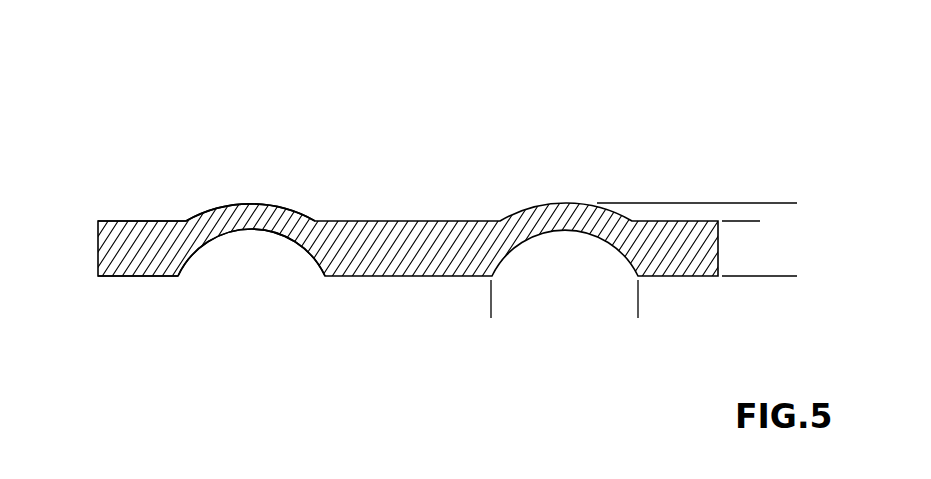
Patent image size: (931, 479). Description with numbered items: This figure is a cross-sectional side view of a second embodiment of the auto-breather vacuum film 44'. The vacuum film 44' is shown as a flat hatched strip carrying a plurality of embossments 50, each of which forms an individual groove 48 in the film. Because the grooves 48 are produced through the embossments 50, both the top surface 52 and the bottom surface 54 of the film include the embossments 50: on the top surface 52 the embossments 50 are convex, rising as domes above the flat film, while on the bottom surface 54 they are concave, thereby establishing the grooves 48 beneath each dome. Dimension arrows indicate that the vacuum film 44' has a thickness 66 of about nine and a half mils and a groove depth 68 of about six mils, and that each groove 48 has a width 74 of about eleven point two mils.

The auto-breather vacuum film 44' is at (426, 167).
The grooves 48 is at (242, 288).
The embossments 50 is at (262, 204).
The top surface 52 is at (122, 220).
The bottom surface 54 is at (141, 278).
The thickness 66 is at (787, 158).
The groove depth 68 is at (751, 187).
The width 74 is at (638, 308).